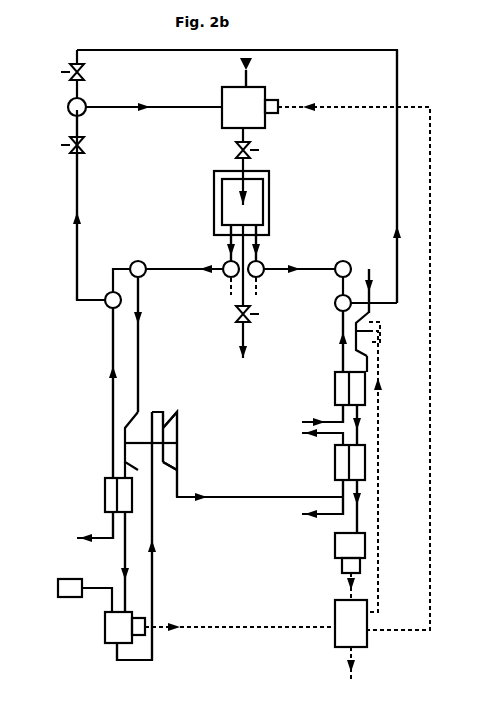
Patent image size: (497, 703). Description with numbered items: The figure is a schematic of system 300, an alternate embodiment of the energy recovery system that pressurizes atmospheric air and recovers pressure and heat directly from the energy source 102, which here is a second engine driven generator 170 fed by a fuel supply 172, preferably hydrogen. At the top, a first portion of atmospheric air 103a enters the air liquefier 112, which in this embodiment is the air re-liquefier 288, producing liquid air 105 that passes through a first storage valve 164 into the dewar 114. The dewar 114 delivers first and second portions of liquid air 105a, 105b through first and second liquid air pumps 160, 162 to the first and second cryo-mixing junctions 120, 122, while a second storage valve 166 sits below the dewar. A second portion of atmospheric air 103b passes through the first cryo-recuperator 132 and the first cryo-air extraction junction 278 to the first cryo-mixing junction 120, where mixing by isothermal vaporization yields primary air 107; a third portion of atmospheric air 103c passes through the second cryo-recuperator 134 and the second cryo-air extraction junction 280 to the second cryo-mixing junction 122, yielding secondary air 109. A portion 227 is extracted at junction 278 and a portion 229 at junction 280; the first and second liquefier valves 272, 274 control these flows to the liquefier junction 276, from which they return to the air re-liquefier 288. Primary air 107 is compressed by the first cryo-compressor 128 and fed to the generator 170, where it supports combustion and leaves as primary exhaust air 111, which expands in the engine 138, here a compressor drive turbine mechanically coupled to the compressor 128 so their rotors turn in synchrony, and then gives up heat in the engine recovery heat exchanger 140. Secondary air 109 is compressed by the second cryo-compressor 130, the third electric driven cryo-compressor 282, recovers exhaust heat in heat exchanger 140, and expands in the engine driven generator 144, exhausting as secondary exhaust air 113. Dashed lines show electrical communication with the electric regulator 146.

The system 300 is at (107, 37).
The second liquefier valve 274 is at (85, 70).
The liquefier junction 276 is at (70, 101).
The first liquefier valve 272 is at (83, 145).
The first portion of atmospheric air 103a is at (240, 68).
The portion of the second portion of atmospheric air 227 is at (148, 110).
The portion of the third portion of atmospheric air 229 is at (393, 225).
The air liquefier 112 is at (240, 98).
The air re-liquefier 288 is at (354, 93).
The first storage valve 164 is at (250, 140).
The liquid air 105 is at (246, 193).
The dewar 114 is at (270, 207).
The first portion of liquid air 105a is at (221, 258).
The second portion of liquid air 105b is at (262, 262).
The first cryo-mixing junction 120 is at (133, 264).
The second cryo-mixing junction 122 is at (348, 264).
The first liquid air pump 160 is at (225, 276).
The second liquid air pump 162 is at (260, 277).
The second storage valve 166 is at (235, 317).
The first cryo-air extraction junction 278 is at (105, 303).
The primary air 107 is at (143, 323).
The second cryo-air extraction junction 280 is at (337, 309).
The third portion of atmospheric air 103c is at (337, 340).
The secondary air 109 is at (373, 298).
The second cryo-compressor 130 is at (365, 345).
The third electric driven cryo-compressor 282 is at (391, 349).
The second cryo-recuperator 134 is at (343, 387).
The engine recovery heat exchanger 140 is at (343, 463).
The first cryo-compressor 128 is at (135, 437).
The engine 138 is at (177, 435).
The primary exhaust air 111 is at (200, 493).
The first cryo-recuperator 132 is at (108, 492).
The second portion of atmospheric air 103b is at (108, 373).
The secondary exhaust air 113 is at (312, 512).
The engine driven generator 144 is at (340, 549).
The fuel supply 172 is at (63, 577).
The energy source 102 is at (112, 627).
The second engine driven generator 170 is at (134, 651).
The electric regulator 146 is at (345, 618).